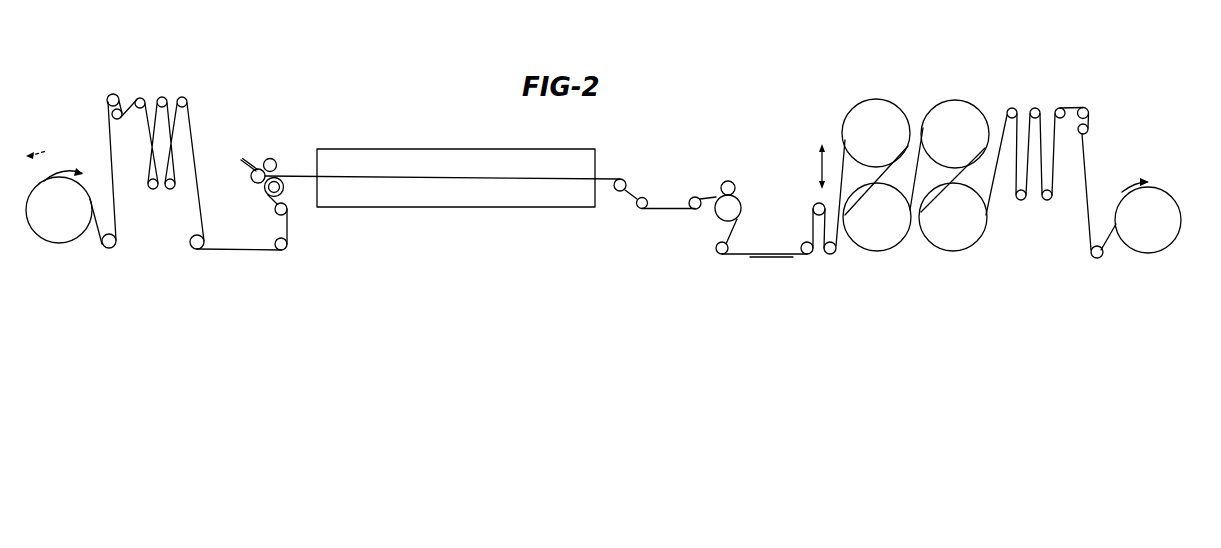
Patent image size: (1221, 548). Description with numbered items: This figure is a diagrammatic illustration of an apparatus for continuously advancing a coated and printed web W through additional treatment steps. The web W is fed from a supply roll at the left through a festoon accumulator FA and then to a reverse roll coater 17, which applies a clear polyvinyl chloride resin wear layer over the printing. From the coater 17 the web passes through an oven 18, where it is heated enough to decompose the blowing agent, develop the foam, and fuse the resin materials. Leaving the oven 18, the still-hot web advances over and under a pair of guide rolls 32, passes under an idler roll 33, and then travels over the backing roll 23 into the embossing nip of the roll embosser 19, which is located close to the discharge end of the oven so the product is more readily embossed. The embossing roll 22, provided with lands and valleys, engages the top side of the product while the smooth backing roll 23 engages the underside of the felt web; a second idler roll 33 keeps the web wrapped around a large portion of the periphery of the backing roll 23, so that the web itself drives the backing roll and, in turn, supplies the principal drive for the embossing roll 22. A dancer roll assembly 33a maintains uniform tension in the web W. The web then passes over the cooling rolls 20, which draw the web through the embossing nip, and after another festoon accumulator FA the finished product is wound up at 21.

The festoon accumulator FA is at (192, 80).
The reverse roll coater 17 is at (293, 143).
The oven 18 is at (456, 166).
The roll embosser 19 is at (718, 186).
The cooling rolls 20 is at (949, 102).
The finished product roll 21 is at (1147, 250).
The embossing roll 22 is at (737, 186).
The backing roll 23 is at (718, 215).
The guide rolls 32 is at (645, 194).
The idler roll 33 is at (702, 198).
The dancer roll assembly 33a is at (814, 251).
The web W is at (243, 249).